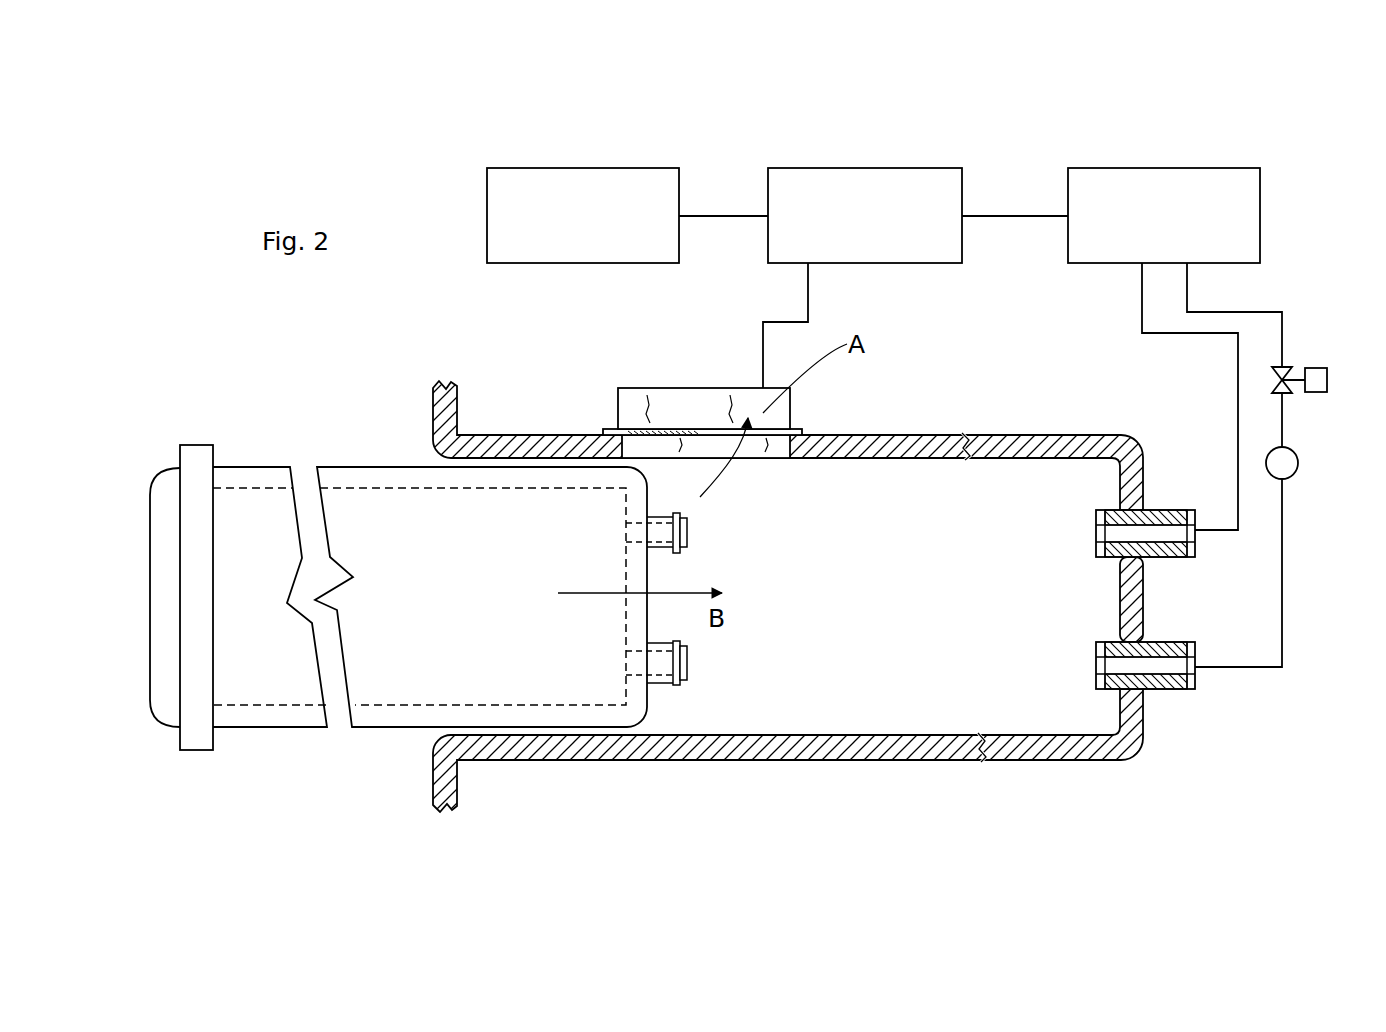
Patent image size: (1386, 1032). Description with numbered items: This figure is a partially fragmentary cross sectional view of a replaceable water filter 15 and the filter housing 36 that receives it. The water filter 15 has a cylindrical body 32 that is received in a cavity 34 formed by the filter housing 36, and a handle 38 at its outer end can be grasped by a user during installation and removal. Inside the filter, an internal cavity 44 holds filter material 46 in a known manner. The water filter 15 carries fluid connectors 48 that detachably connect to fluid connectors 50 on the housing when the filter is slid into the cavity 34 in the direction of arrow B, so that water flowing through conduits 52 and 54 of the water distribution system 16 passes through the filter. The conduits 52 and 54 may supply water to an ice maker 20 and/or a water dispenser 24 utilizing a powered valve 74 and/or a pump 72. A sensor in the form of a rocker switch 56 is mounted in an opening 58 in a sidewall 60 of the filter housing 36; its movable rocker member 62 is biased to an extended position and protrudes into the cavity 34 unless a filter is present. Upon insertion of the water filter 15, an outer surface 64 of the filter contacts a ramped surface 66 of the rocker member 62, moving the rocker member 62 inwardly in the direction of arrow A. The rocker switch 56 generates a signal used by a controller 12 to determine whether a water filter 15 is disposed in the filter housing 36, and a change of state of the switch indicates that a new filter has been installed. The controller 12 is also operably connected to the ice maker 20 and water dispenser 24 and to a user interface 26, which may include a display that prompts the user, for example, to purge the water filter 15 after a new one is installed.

The controller 12 is at (848, 183).
The water filter 15 is at (377, 614).
The water distribution system 16 is at (1273, 465).
The ice maker 20 is at (1176, 190).
The water dispenser 24 is at (1165, 180).
The user interface 26 is at (577, 185).
The cylindrical body 32 is at (292, 728).
The cavity 34 is at (860, 600).
The filter housing 36 is at (740, 762).
The handle 38 is at (158, 647).
The internal cavity 44 is at (367, 505).
The filter material 46 is at (403, 505).
The fluid connectors 48 is at (687, 533).
The fluid connectors 50 is at (1096, 522).
The conduit 52 is at (1238, 415).
The conduit 54 is at (1283, 423).
The rocker switch 56 is at (799, 410).
The opening 58 is at (741, 467).
The sidewall 60 is at (908, 460).
The rocker member 62 is at (753, 480).
The outer surface 64 is at (675, 458).
The ramped surface 66 is at (767, 460).
The pump 72 is at (1298, 468).
The powered valve 74 is at (1286, 368).